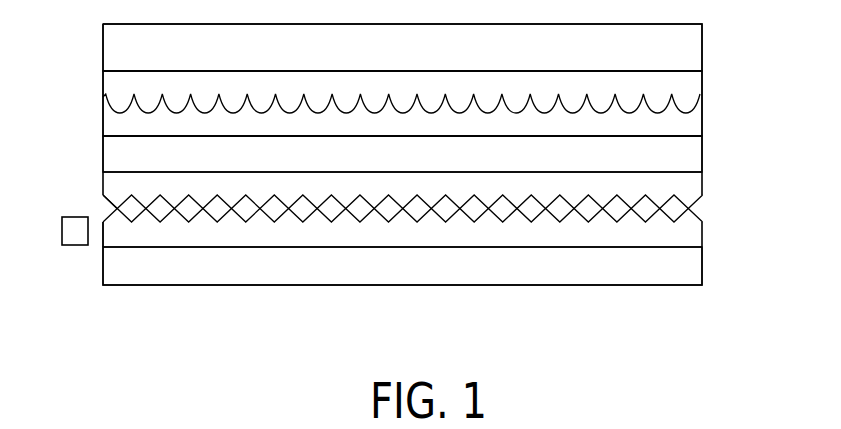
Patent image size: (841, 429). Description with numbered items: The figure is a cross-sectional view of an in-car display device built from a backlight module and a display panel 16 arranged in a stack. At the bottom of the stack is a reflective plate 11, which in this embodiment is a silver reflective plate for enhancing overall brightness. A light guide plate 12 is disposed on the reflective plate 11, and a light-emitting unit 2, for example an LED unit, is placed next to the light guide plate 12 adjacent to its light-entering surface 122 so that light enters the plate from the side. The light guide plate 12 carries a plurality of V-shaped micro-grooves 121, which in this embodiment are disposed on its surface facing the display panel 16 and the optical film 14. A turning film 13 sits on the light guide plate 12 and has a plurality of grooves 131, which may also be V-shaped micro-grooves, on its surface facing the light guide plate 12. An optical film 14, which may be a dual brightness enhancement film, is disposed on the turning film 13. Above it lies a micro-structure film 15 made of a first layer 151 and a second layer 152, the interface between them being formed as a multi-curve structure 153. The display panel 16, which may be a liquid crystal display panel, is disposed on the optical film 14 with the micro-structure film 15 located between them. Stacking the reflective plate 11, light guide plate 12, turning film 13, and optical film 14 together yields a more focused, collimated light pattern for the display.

The light-emitting unit 2 is at (62, 232).
The reflective plate 11 is at (697, 270).
The light guide plate 12 is at (697, 237).
The V-shaped micro-grooves 121 is at (116, 208).
The light-entering surface 122 is at (103, 224).
The turning film 13 is at (697, 183).
The grooves 131 is at (688, 208).
The optical film 14 is at (697, 157).
The micro-structure film 15 is at (425, 101).
The first layer 151 is at (697, 122).
The second layer 152 is at (697, 84).
The multi-curve structure 153 is at (103, 112).
The display panel 16 is at (697, 47).